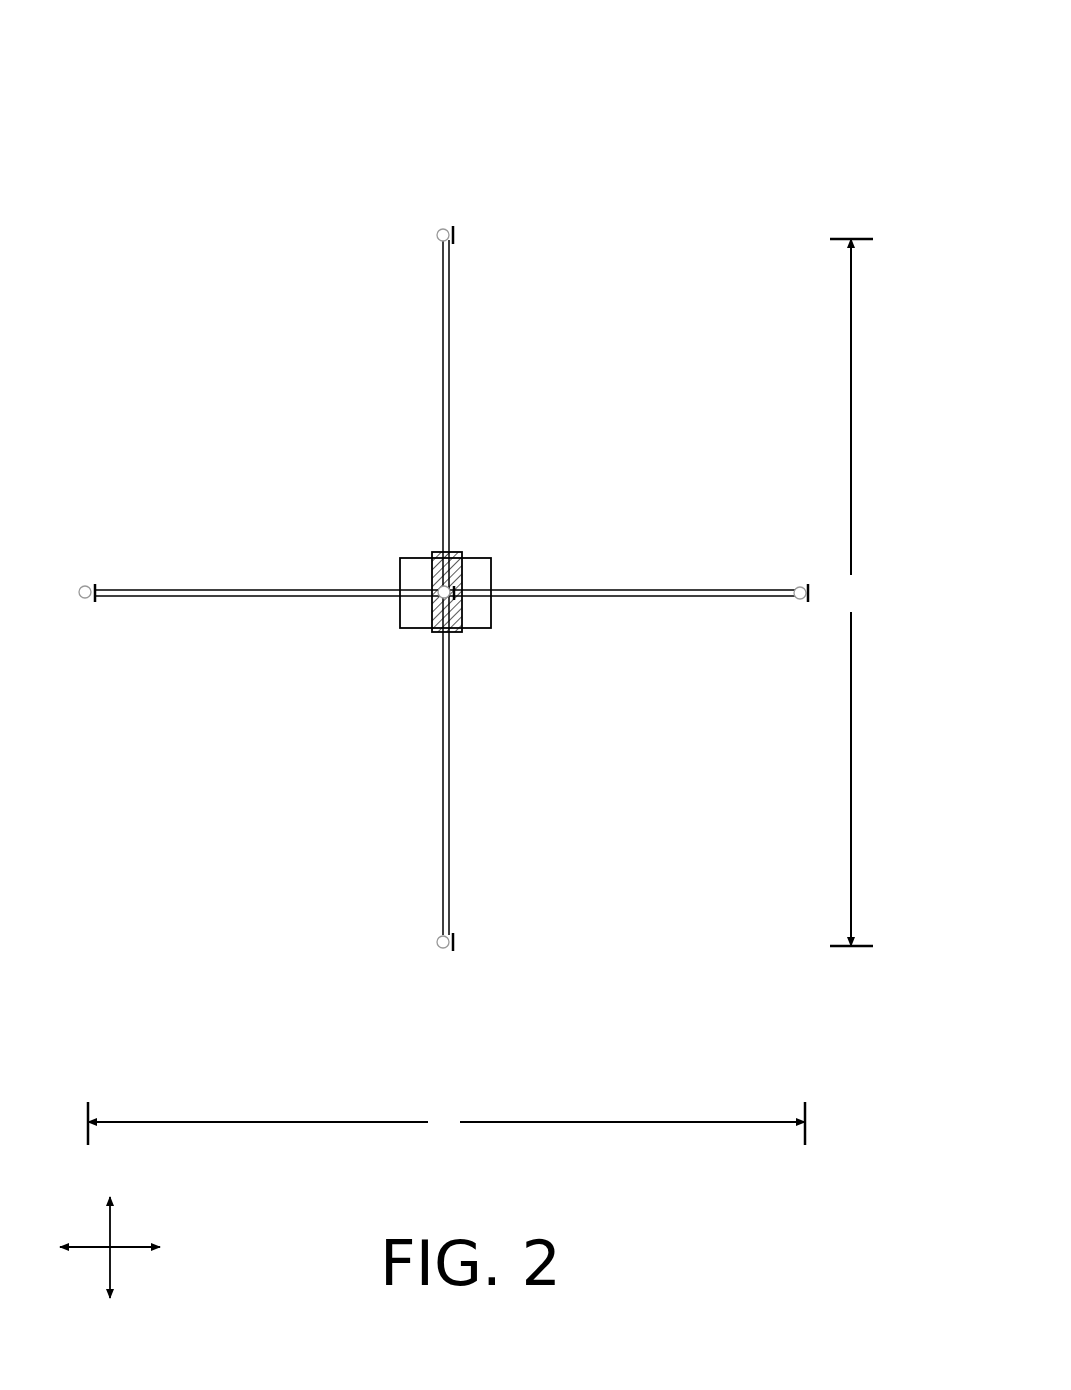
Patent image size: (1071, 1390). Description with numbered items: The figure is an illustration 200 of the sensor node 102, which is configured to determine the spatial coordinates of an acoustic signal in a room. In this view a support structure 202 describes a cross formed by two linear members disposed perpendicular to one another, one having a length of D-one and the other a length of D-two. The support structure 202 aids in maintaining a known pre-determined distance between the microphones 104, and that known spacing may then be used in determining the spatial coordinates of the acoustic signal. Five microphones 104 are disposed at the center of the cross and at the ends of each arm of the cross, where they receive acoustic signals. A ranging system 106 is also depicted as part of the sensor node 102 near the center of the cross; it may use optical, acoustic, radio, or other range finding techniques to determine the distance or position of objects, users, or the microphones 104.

The illustration 200 is at (760, 42).
The sensor node 102 is at (197, 115).
The support structure 202 is at (446, 422).
The microphones 104 is at (474, 615).
The ranging system 106 is at (437, 622).